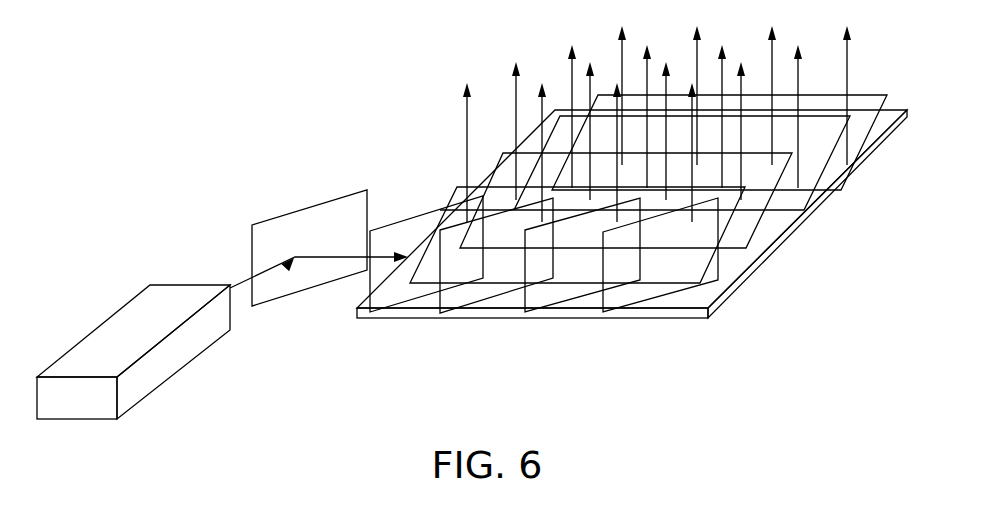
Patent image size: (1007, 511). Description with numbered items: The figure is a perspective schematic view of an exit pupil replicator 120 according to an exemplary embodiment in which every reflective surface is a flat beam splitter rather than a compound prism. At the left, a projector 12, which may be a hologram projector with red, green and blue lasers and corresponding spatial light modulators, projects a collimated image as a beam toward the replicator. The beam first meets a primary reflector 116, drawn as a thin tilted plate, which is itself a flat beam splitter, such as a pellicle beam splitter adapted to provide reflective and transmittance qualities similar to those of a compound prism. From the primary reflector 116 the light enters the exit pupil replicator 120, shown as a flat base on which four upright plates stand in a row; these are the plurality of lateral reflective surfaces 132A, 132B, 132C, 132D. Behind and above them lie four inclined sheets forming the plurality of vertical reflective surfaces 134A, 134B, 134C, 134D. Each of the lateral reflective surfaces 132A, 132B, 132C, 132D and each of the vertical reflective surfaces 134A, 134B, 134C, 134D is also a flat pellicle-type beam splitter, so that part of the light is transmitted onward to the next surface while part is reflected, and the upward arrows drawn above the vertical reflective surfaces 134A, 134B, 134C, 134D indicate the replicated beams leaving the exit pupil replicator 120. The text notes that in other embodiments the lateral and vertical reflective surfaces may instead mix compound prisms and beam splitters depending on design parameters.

The projector 12 is at (133, 352).
The primary reflector 116 is at (310, 207).
The exit pupil replicator 120 is at (742, 300).
The lateral reflective surface 132A is at (403, 303).
The lateral reflective surface 132B is at (485, 303).
The lateral reflective surface 132C is at (565, 303).
The lateral reflective surface 132D is at (655, 303).
The vertical reflective surface 134A is at (725, 233).
The vertical reflective surface 134B is at (768, 215).
The vertical reflective surface 134C is at (818, 178).
The vertical reflective surface 134D is at (868, 128).